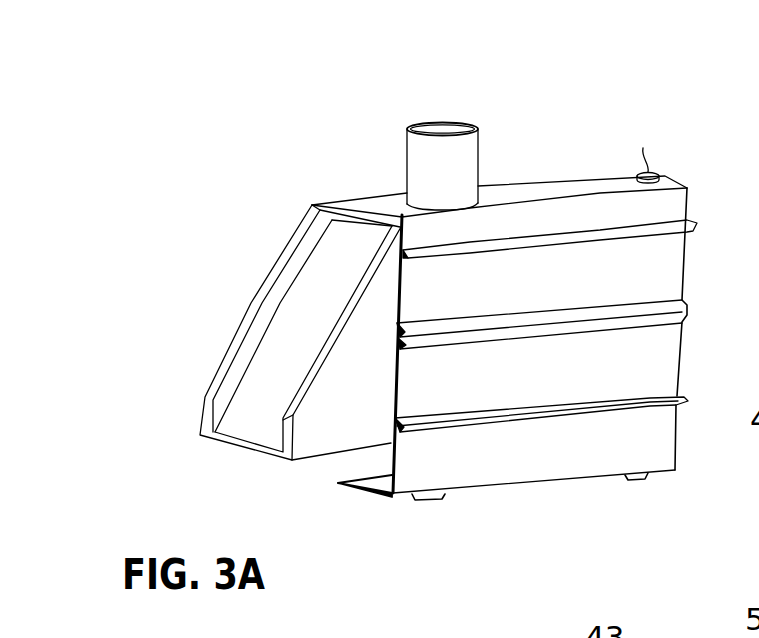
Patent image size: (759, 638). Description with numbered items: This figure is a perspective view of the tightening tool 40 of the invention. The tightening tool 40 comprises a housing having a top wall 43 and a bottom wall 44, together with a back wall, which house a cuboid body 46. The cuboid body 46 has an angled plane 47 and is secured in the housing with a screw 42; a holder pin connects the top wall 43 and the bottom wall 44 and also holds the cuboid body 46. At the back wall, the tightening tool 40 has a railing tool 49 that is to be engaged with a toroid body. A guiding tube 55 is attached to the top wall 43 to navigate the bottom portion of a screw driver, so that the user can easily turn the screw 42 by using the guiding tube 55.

The tightening tool 40 is at (279, 118).
The screw 42 is at (430, 498).
The top wall 43 is at (570, 184).
The bottom wall 44 is at (523, 486).
The cuboid body 46 is at (317, 443).
The angled plane 47 is at (257, 420).
The railing tool 49 is at (668, 267).
The guiding tube 55 is at (463, 150).